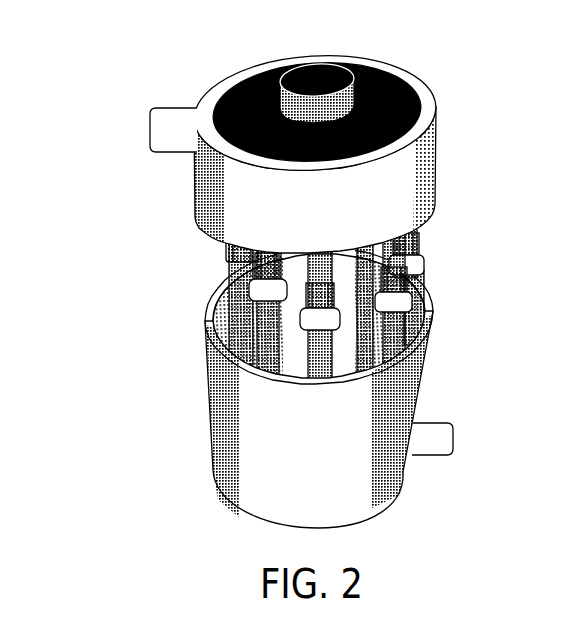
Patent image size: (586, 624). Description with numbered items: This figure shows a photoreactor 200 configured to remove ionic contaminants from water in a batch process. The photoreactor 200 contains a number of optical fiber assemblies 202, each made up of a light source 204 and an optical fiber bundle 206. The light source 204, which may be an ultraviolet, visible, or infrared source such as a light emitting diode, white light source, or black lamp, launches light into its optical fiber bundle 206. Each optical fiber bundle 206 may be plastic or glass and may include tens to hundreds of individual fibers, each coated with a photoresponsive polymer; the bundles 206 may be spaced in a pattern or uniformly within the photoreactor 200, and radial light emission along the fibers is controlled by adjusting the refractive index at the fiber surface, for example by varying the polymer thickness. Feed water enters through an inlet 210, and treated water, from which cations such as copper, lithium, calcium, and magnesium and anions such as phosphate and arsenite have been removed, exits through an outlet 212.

The photoreactor 200 is at (275, 275).
The optical fiber assembly 202 is at (225, 257).
The light source 204 is at (418, 236).
The optical fiber bundle 206 is at (393, 333).
The inlet 210 is at (171, 107).
The outlet 212 is at (421, 454).